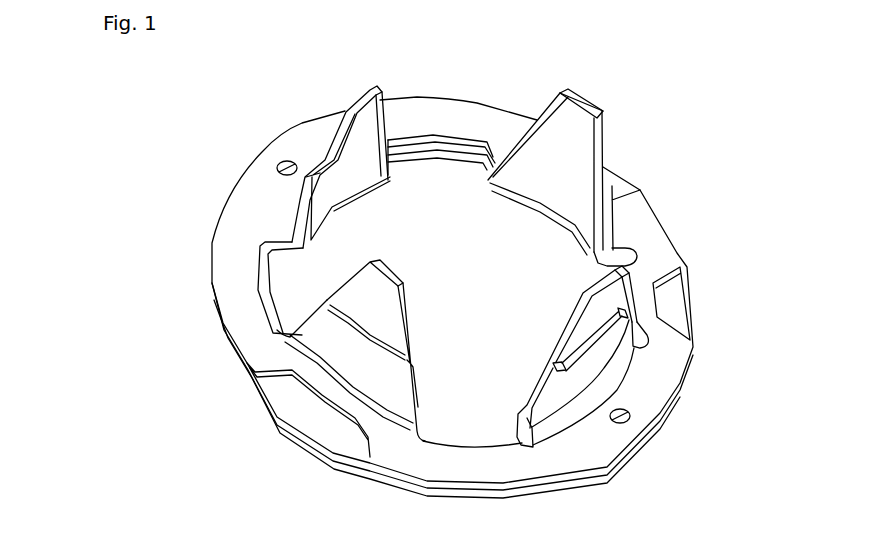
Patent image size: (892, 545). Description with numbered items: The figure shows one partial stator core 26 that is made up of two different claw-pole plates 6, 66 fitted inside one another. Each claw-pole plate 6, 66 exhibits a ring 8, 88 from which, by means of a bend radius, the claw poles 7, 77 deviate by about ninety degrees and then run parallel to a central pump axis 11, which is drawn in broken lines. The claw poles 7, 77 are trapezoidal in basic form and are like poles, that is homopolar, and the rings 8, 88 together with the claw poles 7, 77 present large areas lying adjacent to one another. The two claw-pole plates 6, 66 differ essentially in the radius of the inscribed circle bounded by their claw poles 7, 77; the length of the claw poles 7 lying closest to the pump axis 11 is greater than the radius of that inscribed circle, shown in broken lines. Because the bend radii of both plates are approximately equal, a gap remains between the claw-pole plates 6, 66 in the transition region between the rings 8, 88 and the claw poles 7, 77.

The partial stator core 26 is at (293, 102).
The claw-pole plate 6 is at (590, 98).
The claw pole 7 is at (582, 165).
The central pump axis 11 is at (460, 265).
The ring 88 is at (245, 210).
The claw-pole plate 66 is at (670, 416).
The ring 8 is at (316, 415).
The claw pole 77 is at (370, 368).